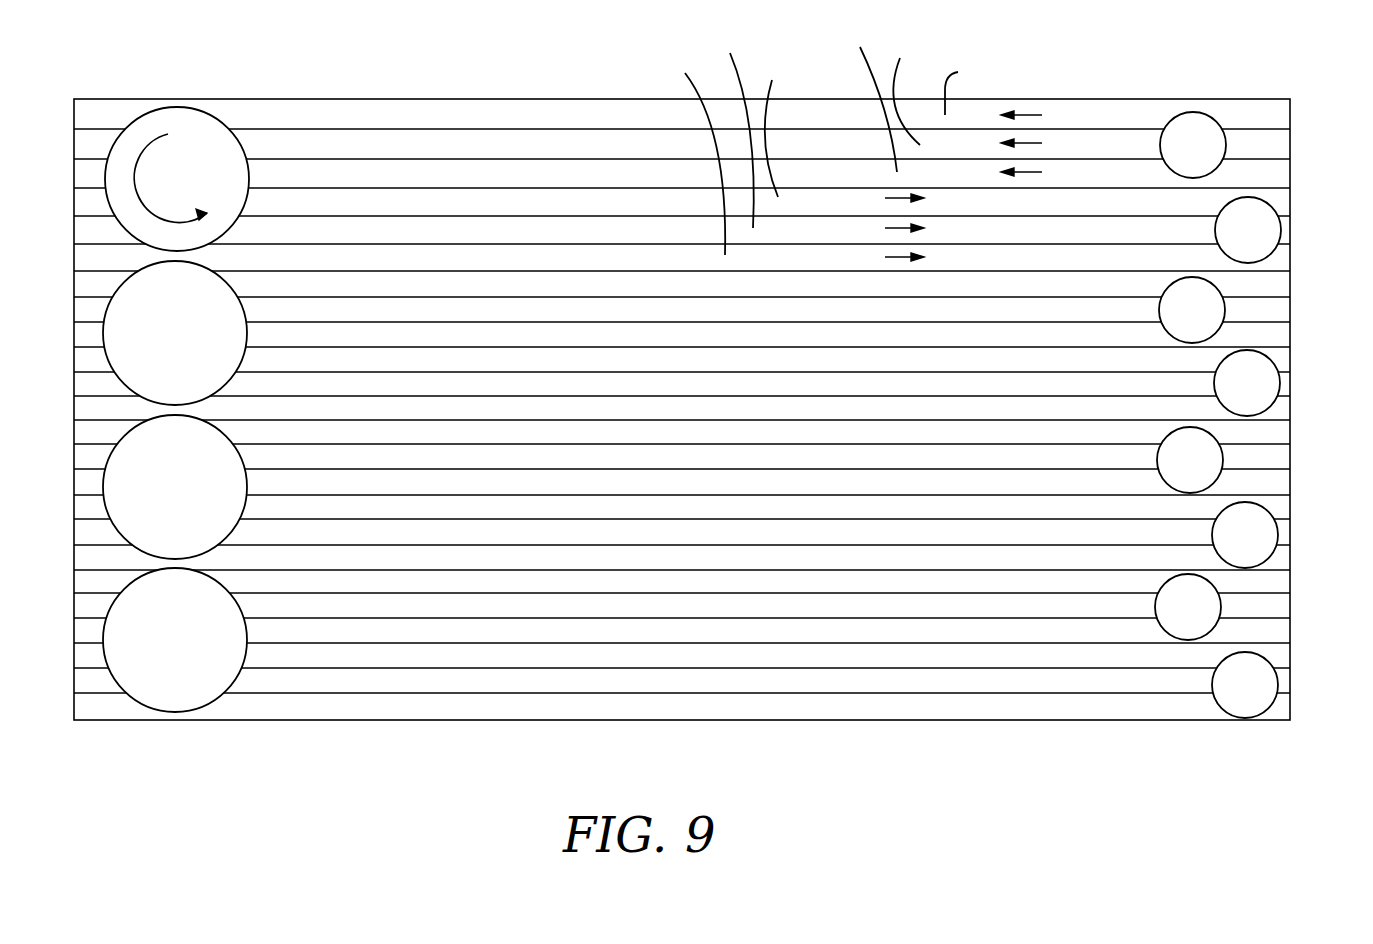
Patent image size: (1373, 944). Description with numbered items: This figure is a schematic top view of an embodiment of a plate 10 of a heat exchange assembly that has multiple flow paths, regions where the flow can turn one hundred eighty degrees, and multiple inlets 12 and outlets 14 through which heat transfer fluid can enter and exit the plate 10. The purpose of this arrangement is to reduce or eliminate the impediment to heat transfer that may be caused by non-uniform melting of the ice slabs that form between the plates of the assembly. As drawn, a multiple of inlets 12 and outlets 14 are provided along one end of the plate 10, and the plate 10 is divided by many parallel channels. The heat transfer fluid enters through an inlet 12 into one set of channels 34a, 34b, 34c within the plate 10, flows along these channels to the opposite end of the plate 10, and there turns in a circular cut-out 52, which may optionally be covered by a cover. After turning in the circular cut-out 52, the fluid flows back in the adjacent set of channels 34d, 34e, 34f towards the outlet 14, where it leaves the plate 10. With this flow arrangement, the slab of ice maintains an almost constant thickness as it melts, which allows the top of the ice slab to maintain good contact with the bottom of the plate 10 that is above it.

The plate 10 is at (748, 720).
The inlets 12 is at (1180, 617).
The outlets 14 is at (1258, 233).
The circular cut-out 52 is at (193, 160).
The channel 34a is at (973, 86).
The channel 34b is at (917, 92).
The channel 34c is at (866, 98).
The channel 34d is at (784, 127).
The channel 34e is at (736, 128).
The channel 34f is at (686, 154).